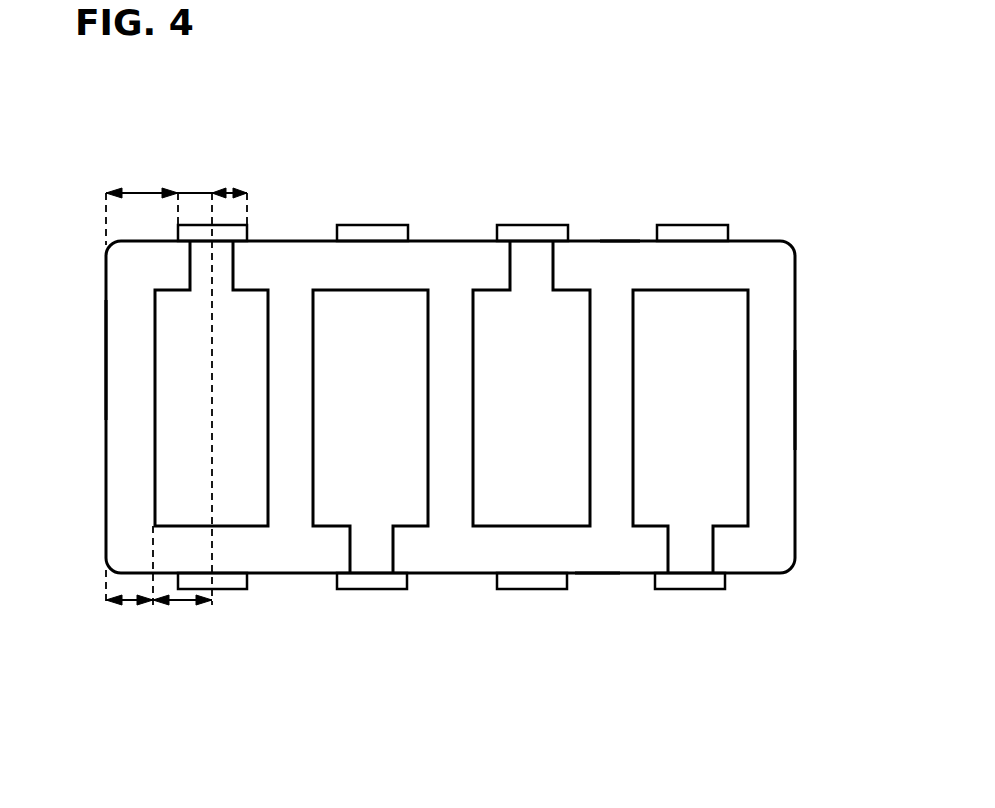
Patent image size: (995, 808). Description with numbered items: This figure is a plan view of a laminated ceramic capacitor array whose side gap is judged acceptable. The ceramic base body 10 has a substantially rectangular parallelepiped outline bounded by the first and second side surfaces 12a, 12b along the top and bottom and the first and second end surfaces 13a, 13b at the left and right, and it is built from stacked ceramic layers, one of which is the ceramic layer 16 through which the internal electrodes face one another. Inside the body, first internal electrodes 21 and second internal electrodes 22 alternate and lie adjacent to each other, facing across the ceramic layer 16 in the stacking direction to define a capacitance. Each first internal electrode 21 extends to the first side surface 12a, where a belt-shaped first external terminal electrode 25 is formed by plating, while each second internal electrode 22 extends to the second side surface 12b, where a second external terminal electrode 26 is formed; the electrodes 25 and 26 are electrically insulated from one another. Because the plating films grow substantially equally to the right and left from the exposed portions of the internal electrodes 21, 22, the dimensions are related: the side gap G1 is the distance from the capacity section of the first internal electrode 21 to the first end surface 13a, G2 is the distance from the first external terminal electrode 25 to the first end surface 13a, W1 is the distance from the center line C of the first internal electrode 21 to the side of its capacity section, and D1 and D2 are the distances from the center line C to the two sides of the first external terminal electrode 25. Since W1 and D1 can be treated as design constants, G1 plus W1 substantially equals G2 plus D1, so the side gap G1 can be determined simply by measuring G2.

The ceramic base body 10 is at (765, 229).
The first side surface 12a is at (610, 239).
The second side surface 12b is at (590, 576).
The first end surface 13a is at (106, 350).
The second end surface 13b is at (797, 398).
The ceramic layer 16 is at (780, 333).
The first internal electrode 21 is at (168, 432).
The second internal electrode 22 is at (333, 470).
The first external terminal electrode 25 is at (250, 240).
The second external terminal electrode 26 is at (237, 591).
The side gap G1 is at (130, 608).
The distance between first external terminal electrode and first end surface G2 is at (150, 190).
The distance between center line and one side of first external terminal electrode D1 is at (198, 190).
The distance between center line and other side of first external terminal electrode D2 is at (230, 190).
The distance between center line and side of capacity section W1 is at (178, 608).
The center line C is at (212, 633).